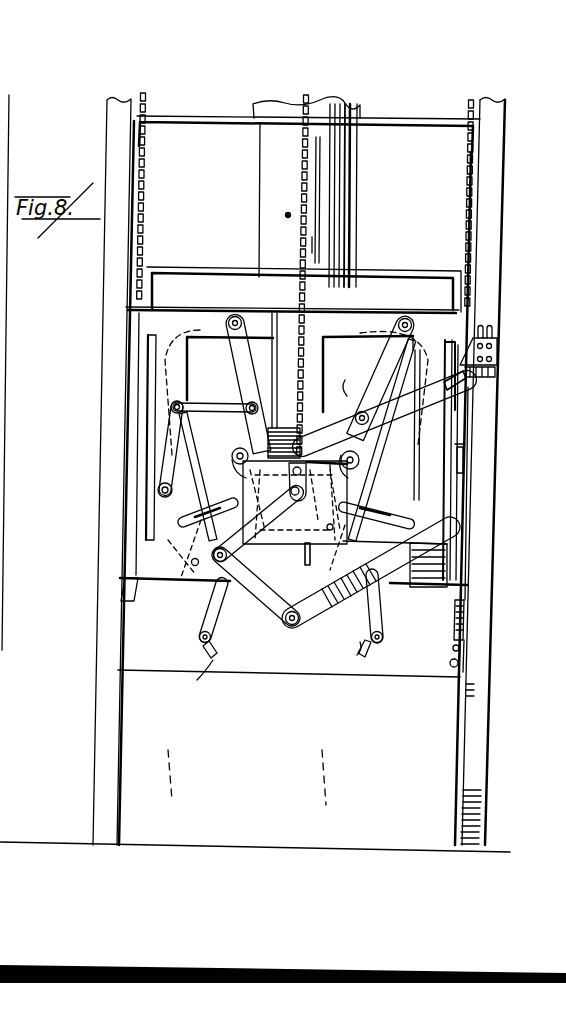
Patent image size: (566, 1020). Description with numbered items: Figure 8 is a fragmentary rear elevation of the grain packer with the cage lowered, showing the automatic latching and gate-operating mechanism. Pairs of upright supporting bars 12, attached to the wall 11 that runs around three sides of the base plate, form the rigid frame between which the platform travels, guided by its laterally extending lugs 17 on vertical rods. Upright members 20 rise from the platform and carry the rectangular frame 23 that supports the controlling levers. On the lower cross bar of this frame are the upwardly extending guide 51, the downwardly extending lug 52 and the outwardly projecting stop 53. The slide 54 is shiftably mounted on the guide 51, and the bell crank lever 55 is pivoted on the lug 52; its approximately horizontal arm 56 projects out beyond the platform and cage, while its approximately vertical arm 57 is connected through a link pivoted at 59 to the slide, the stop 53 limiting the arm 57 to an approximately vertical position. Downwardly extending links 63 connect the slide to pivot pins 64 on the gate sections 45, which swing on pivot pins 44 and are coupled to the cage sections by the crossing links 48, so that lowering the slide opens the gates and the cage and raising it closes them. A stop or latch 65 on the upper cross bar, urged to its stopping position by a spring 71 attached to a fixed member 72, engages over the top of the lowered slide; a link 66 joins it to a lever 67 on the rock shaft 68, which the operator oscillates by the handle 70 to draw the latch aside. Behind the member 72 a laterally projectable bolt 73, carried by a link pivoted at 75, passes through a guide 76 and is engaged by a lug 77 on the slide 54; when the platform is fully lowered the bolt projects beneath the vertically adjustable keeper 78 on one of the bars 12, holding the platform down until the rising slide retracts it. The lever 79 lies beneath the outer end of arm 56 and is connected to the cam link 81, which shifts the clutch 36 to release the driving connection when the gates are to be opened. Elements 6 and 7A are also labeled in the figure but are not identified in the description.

The link 6 is at (384, 626).
The bracket 7A is at (378, 300).
The wall 11 is at (295, 677).
The supporting bars 12 is at (120, 212).
The laterally extending lugs 17 is at (463, 584).
The upright members 20 is at (140, 457).
The rectangular frame 23 is at (153, 390).
The clutch 36 is at (345, 380).
The pivot pins 44 is at (194, 566).
The gate sections 45 is at (197, 680).
The links 48 is at (388, 517).
The guide 51 is at (298, 332).
The lug 52 is at (336, 647).
The stop 53 is at (261, 584).
The slide 54 is at (334, 498).
The bell crank lever 55 is at (371, 573).
The horizontal arm 56 is at (408, 584).
The vertical arm 57 is at (247, 622).
The pivot pin 59 is at (288, 492).
The links 63 is at (217, 617).
The pivot pins 64 is at (203, 643).
The stop 65 is at (236, 352).
The link 66 is at (217, 404).
The lever 67 is at (171, 420).
The shaft 68 is at (158, 490).
The handle 70 is at (123, 600).
The spring 71 is at (271, 327).
The member 72 is at (377, 379).
The bolt 73 is at (388, 418).
The pivot 75 is at (406, 318).
The guide 76 is at (445, 407).
The lug 77 is at (310, 457).
The keeper 78 is at (499, 353).
The lever 79 is at (463, 662).
The cam link 81 is at (462, 643).